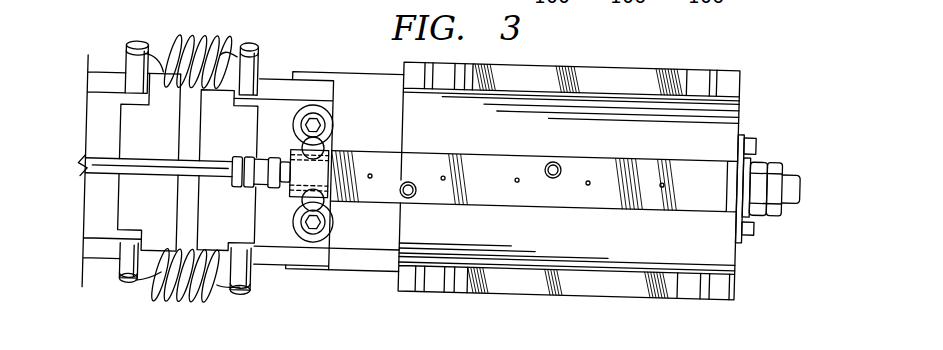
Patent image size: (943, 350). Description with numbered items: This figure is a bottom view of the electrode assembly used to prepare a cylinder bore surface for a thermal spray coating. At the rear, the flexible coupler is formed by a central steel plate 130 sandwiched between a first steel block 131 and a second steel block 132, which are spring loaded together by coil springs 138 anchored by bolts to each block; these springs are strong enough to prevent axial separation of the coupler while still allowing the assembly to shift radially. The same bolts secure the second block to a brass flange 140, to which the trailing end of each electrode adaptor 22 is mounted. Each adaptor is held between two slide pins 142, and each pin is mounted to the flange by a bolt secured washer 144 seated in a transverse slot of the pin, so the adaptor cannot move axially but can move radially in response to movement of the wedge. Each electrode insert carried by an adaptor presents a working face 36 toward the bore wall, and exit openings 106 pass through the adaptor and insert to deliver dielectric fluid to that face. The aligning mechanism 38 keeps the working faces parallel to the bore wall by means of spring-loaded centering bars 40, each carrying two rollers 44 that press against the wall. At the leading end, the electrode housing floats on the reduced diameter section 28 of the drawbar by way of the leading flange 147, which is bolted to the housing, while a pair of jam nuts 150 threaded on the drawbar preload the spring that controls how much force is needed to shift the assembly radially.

The electrode adaptor 22 is at (334, 79).
The reduced diameter section 28 is at (792, 182).
The working face 36 is at (473, 191).
The aligning mechanism 38 is at (627, 54).
The centering bar 40 is at (549, 68).
The roller 44 is at (439, 71).
The exit opening 106 is at (441, 176).
The central steel plate 130 is at (186, 146).
The first steel block 131 is at (159, 140).
The second steel block 132 is at (234, 147).
The coil spring 138 is at (183, 42).
The brass flange 140 is at (268, 93).
The slide pin 142 is at (327, 152).
The bolt secured washer 144 is at (325, 114).
The leading flange 147 is at (739, 236).
The jam nut 150 is at (770, 150).